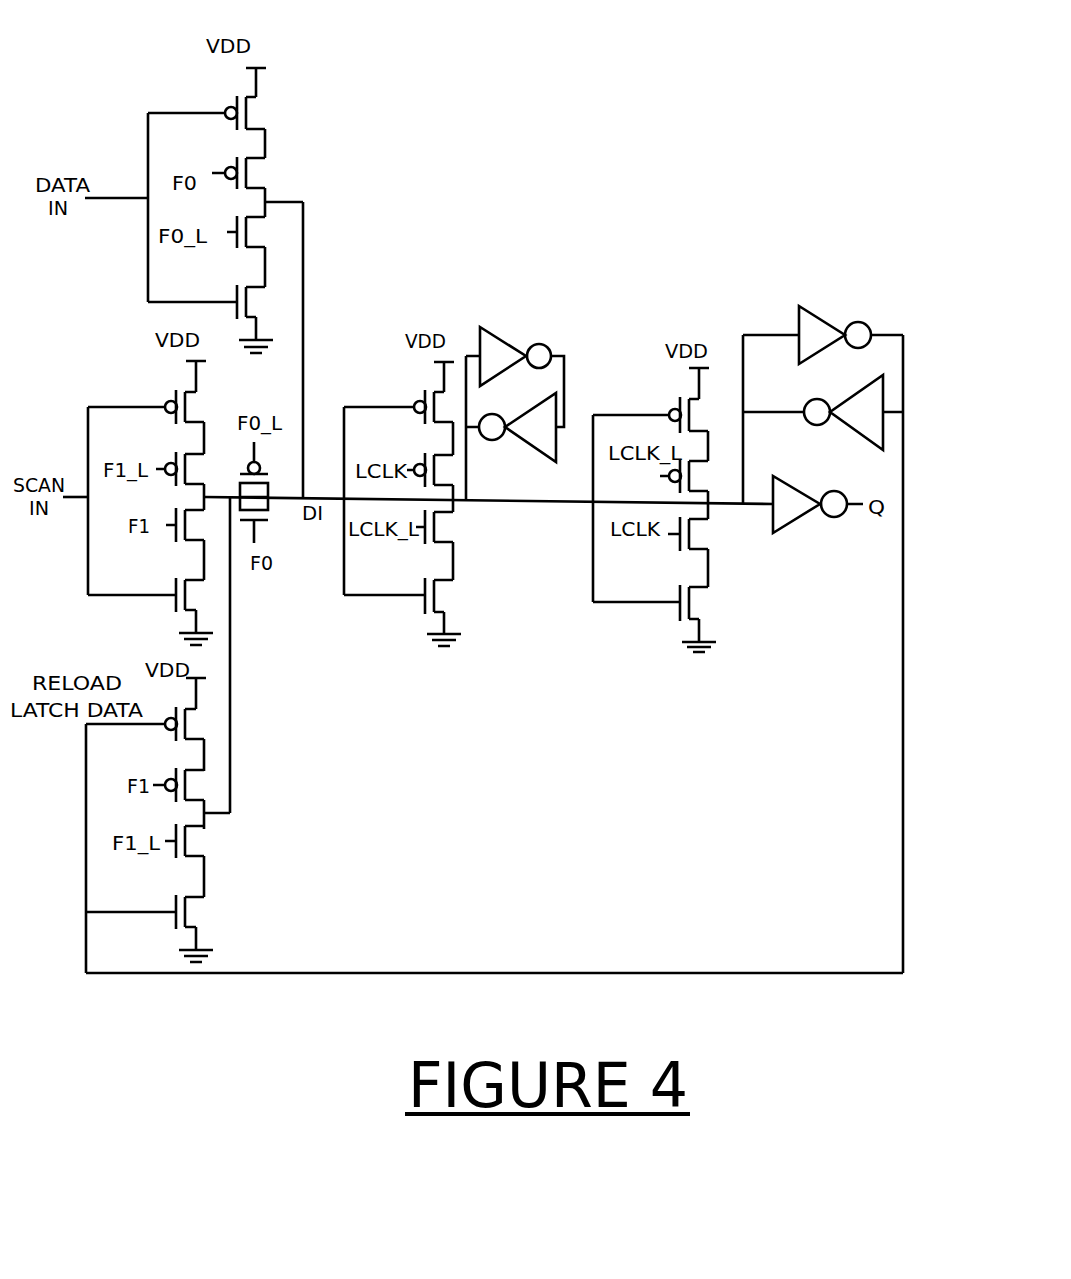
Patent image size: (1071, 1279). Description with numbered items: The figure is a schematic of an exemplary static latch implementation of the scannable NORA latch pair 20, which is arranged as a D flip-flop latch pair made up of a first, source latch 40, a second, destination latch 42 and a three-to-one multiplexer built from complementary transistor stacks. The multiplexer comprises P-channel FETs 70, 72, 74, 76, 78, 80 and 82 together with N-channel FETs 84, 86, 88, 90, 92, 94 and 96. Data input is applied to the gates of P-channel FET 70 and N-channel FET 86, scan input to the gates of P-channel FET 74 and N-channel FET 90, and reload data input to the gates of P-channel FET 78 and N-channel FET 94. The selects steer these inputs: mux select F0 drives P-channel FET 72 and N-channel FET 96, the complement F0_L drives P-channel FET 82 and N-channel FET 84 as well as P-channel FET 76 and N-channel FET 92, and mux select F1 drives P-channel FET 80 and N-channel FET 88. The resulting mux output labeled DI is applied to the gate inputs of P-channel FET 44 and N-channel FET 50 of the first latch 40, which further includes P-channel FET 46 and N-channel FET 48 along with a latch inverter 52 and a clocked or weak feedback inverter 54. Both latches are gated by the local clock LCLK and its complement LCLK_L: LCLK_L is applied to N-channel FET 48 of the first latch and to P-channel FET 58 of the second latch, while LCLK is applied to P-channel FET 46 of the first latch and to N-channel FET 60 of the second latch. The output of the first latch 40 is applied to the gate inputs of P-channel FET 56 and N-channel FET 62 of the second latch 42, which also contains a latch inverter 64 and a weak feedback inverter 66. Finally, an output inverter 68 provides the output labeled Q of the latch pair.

The scannable NORA latch pair 20 is at (550, 236).
The first latch 40 is at (532, 304).
The second latch 42 is at (867, 298).
The P-channel FET 44 is at (402, 478).
The P-channel FET 46 is at (432, 454).
The N-channel FET 48 is at (445, 527).
The N-channel FET 50 is at (410, 594).
The latch inverter 52 is at (497, 338).
The weak feedback inverter 54 is at (532, 447).
The P-channel FET 56 is at (654, 485).
The P-channel FET 58 is at (690, 462).
The N-channel FET 60 is at (698, 534).
The N-channel FET 62 is at (657, 600).
The latch inverter 64 is at (815, 316).
The weak feedback inverter 66 is at (849, 426).
The output inverter 68 is at (792, 522).
The P-channel FET 70 is at (213, 185).
The P-channel FET 72 is at (244, 159).
The P-channel FET 74 is at (154, 478).
The P-channel FET 76 is at (192, 454).
The P-channel FET 78 is at (149, 825).
The P-channel FET 80 is at (187, 770).
The P-channel FET 82 is at (268, 476).
The N-channel FET 84 is at (249, 233).
The N-channel FET 86 is at (212, 300).
The N-channel FET 88 is at (193, 525).
The N-channel FET 90 is at (153, 592).
The N-channel FET 92 is at (190, 841).
The N-channel FET 94 is at (149, 909).
The N-channel FET 96 is at (268, 520).